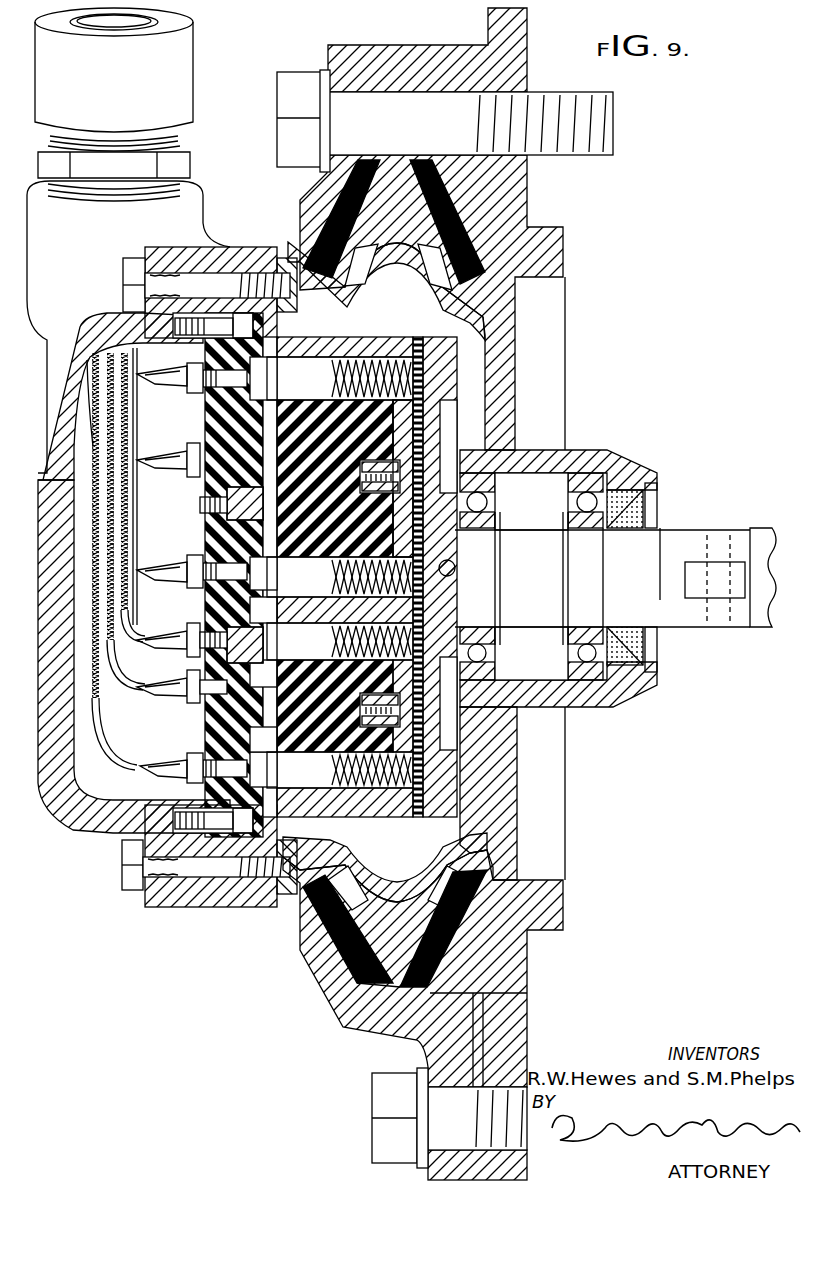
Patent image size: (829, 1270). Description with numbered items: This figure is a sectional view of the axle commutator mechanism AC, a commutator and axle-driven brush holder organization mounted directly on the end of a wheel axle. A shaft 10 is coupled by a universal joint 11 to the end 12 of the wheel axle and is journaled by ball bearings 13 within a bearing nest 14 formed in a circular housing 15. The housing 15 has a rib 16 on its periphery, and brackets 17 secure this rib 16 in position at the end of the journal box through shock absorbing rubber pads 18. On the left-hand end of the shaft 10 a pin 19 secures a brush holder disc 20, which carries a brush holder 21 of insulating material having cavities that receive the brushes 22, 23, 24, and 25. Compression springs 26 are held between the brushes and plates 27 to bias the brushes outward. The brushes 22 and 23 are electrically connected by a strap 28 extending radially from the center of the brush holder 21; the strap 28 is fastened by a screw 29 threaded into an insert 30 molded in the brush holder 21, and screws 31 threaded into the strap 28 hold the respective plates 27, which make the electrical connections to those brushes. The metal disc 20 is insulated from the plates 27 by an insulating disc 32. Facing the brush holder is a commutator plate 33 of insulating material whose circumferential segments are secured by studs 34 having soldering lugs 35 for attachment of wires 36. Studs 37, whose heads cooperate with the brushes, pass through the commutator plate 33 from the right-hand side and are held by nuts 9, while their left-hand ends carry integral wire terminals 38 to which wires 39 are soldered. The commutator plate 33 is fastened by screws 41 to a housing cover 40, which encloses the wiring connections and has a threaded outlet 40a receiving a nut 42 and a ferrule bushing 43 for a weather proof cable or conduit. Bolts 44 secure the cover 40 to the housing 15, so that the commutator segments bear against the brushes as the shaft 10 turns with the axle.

The nuts 9 is at (196, 393).
The shaft 10 is at (530, 628).
The universal joint 11 is at (730, 624).
The end of wheel axle 12 is at (765, 592).
The ball bearings 13 is at (486, 653).
The bearing nest 14 is at (531, 576).
The circular housing 15 is at (504, 378).
The rib 16 is at (357, 973).
The brackets 17 is at (300, 205).
The shock absorbing rubber pads 18 is at (327, 927).
The pin 19 is at (453, 572).
The brush holder disc 20 is at (450, 370).
The brush holder 21 is at (362, 345).
The brush 22 is at (263, 372).
The brush 23 is at (331, 610).
The brush 24 is at (262, 700).
The brush 25 is at (274, 762).
The compression springs 26 is at (330, 380).
The plate 27 is at (410, 380).
The connecting strap 28 is at (455, 508).
The screw 29 is at (412, 470).
The insert 30 is at (400, 462).
The screws 31 is at (416, 398).
The insulating disc 32 is at (418, 345).
The commutator plate 33 is at (205, 790).
The studs 34 is at (190, 455).
The soldering lugs 35 is at (180, 468).
The wires 36 is at (145, 452).
The studs 37 is at (255, 390).
The wire terminals 38 is at (190, 375).
The wires 39 is at (148, 368).
The housing cover 40 is at (72, 785).
The threaded outlet 40a is at (246, 197).
The screws 41 is at (253, 325).
The nut 42 is at (187, 160).
The ferrule bushing 43 is at (192, 68).
The bolts 44 is at (123, 283).
The axle commutator mechanism AC is at (517, 770).